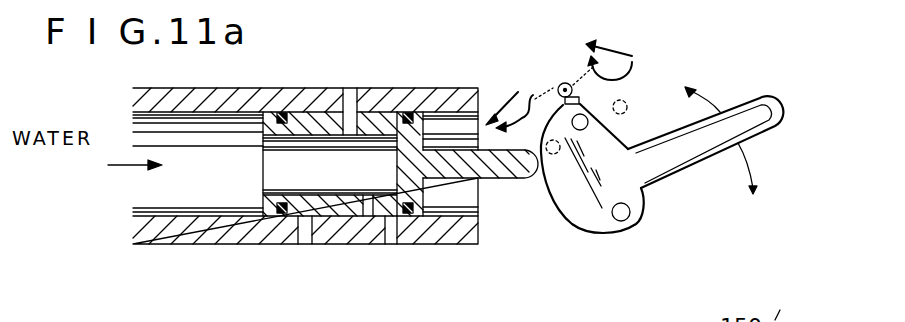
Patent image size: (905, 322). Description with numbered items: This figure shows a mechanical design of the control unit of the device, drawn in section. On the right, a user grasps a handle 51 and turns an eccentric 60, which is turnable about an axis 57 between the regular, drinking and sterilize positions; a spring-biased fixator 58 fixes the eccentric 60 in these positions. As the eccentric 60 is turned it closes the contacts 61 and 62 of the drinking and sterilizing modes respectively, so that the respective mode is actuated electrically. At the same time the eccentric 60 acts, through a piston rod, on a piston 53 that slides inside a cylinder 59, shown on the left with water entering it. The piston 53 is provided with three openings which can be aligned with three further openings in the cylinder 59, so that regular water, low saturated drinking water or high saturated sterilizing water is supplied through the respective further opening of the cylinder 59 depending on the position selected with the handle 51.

The handle 51 is at (746, 98).
The piston 53 is at (430, 193).
The axis 57 is at (621, 221).
The spring-biased fixator 58 is at (588, 122).
The cylinder 59 is at (205, 232).
The eccentric 60 is at (560, 218).
The contact of the drinking mode 61 is at (505, 98).
The contact of the sterilizing mode 62 is at (613, 46).